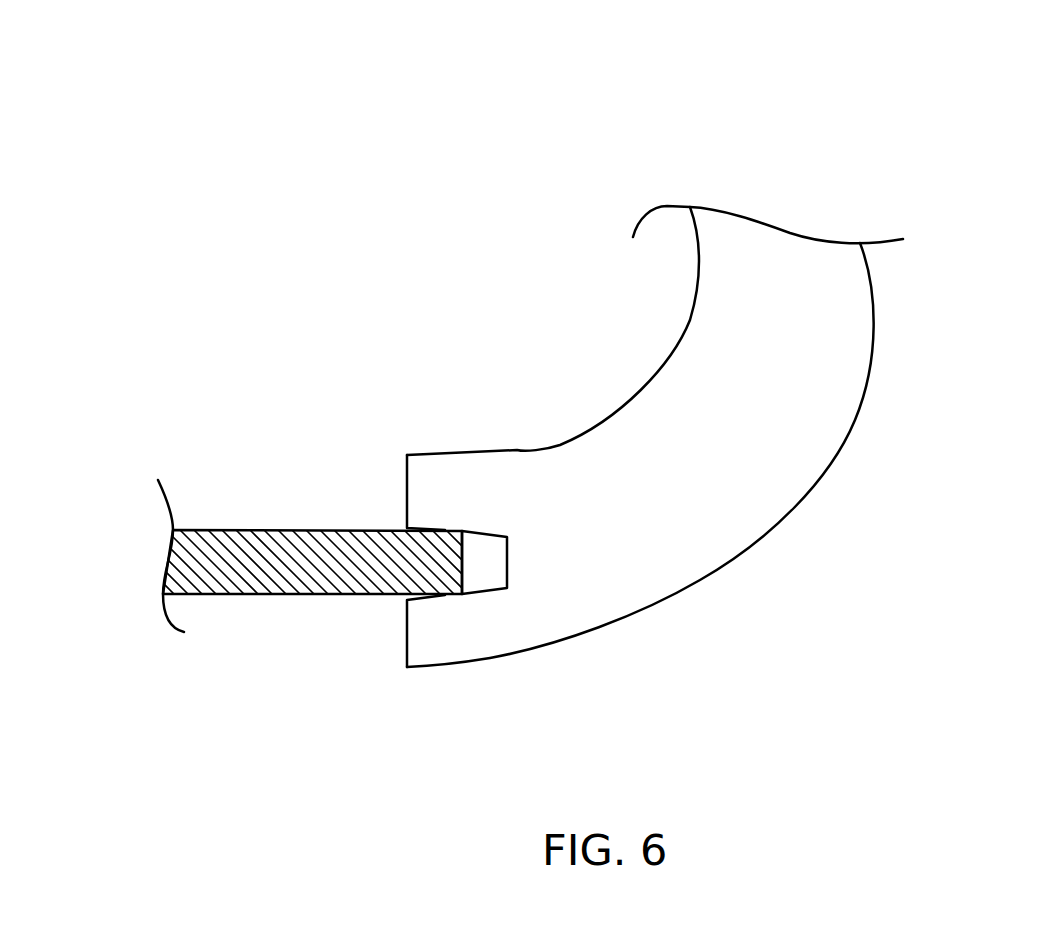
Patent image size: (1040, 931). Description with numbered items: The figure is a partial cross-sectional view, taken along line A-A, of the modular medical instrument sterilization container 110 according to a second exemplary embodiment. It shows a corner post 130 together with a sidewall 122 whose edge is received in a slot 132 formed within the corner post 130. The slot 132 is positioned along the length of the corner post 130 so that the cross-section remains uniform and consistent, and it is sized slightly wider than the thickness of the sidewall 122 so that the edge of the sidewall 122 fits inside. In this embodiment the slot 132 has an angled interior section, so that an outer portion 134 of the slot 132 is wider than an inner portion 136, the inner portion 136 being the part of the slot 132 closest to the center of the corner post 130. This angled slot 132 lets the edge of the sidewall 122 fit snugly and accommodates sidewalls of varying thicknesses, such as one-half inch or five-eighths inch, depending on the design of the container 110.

The modular medical instrument sterilization container 110 is at (746, 126).
The sidewall 122 is at (288, 529).
The corner post 130 is at (720, 490).
The slot 132 is at (480, 561).
The outer portion 134 is at (407, 528).
The inner portion 136 is at (507, 573).